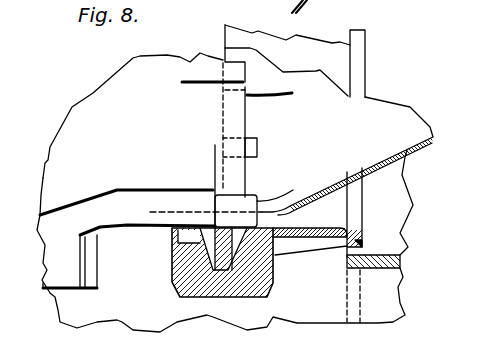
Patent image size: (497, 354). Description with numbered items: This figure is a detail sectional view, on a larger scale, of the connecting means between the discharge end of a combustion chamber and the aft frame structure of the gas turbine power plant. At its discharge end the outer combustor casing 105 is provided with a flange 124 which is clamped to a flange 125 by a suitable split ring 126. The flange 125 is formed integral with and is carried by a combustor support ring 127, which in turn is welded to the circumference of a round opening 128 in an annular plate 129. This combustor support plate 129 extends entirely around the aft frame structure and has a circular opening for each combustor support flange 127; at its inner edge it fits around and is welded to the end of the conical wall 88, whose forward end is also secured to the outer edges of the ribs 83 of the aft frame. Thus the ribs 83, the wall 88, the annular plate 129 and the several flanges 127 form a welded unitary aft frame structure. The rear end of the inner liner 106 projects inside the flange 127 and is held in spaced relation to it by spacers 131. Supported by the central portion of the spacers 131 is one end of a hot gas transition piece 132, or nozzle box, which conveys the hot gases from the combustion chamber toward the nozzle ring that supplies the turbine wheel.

The rib 83 is at (120, 302).
The conical wall 88 is at (395, 270).
The outer combustor casing 105 is at (55, 292).
The inner liner 106 is at (72, 207).
The flange 124 is at (173, 262).
The flange 125 is at (233, 257).
The split ring 126 is at (178, 285).
The combustor support ring 127 is at (298, 228).
The round opening 128 is at (355, 190).
The annular plate 129 is at (363, 242).
The spacers 131 is at (248, 200).
The hot gas transition piece 132 is at (395, 112).